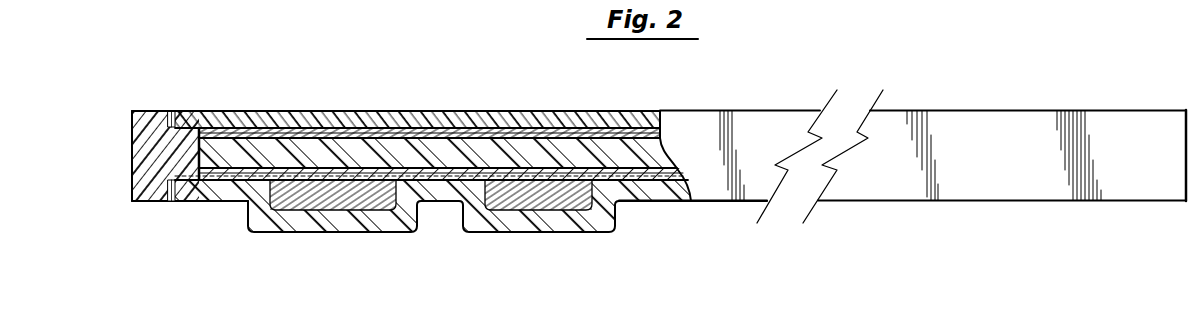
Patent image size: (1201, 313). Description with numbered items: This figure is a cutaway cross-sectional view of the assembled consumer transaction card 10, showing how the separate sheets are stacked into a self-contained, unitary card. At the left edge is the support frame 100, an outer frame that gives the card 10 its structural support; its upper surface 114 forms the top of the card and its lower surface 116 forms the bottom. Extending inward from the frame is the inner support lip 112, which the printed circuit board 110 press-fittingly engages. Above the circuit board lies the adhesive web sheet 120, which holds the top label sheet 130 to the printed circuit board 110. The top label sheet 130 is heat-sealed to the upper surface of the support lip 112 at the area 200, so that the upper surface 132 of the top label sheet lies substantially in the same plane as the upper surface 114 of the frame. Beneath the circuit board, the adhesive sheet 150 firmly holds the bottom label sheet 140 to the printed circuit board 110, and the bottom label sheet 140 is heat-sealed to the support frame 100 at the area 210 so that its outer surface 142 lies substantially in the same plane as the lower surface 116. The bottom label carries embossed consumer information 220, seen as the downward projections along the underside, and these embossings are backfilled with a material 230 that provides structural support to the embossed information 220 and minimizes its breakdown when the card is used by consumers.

The consumer transaction card 10 is at (703, 106).
The support frame 100 is at (132, 146).
The printed circuit board 110 is at (427, 147).
The inner support lip 112 is at (190, 160).
The upper surface 114 is at (152, 110).
The lower surface 116 is at (145, 203).
The adhesive web sheet 120 is at (355, 132).
The top label sheet 130 is at (281, 118).
The upper surface of the top label sheet 132 is at (190, 111).
The bottom label sheet 140 is at (187, 192).
The outer surface of the lower label sheet 142 is at (212, 203).
The adhesive sheet 150 is at (640, 172).
The heat-seal area 200 is at (172, 102).
The heat-seal area 210 is at (167, 210).
The embossed consumer information 220 is at (382, 222).
The backfill material 230 is at (330, 198).